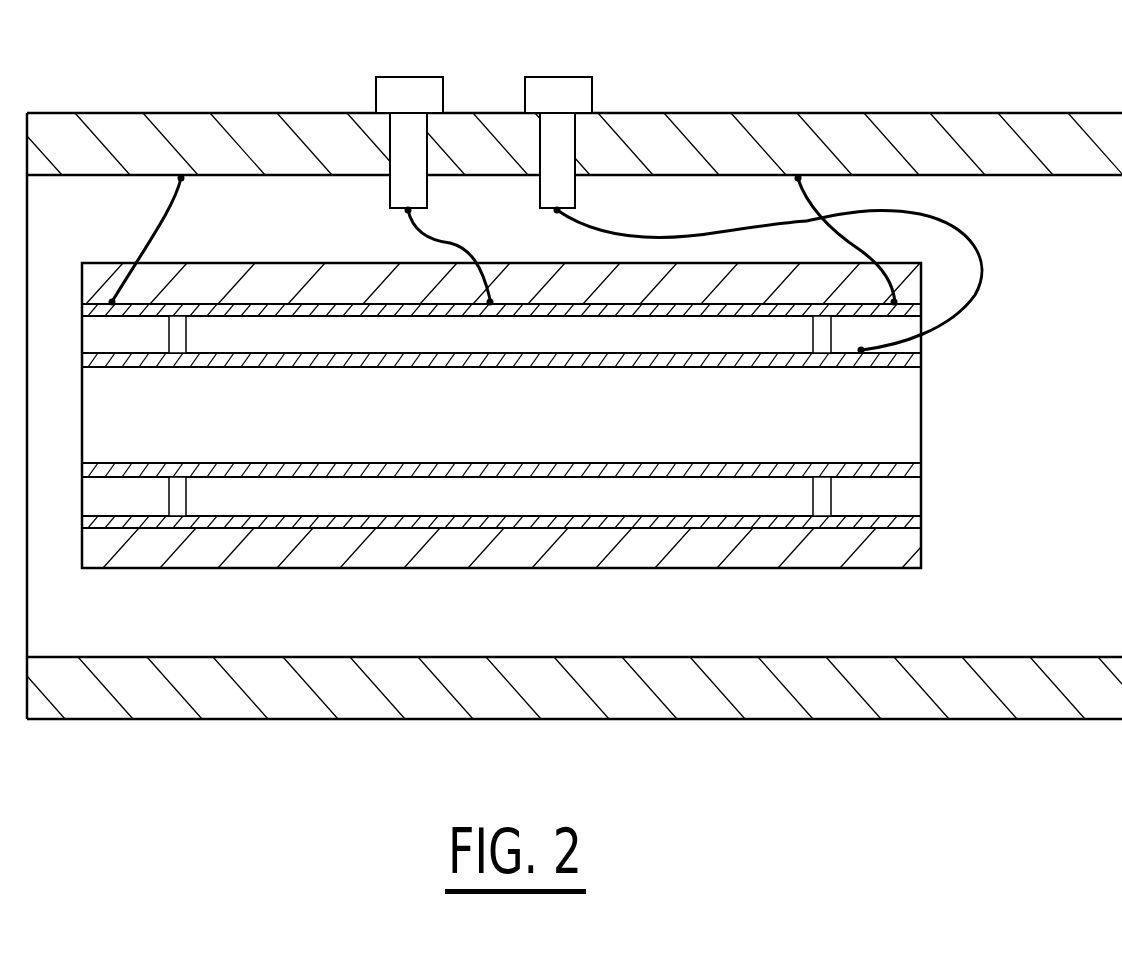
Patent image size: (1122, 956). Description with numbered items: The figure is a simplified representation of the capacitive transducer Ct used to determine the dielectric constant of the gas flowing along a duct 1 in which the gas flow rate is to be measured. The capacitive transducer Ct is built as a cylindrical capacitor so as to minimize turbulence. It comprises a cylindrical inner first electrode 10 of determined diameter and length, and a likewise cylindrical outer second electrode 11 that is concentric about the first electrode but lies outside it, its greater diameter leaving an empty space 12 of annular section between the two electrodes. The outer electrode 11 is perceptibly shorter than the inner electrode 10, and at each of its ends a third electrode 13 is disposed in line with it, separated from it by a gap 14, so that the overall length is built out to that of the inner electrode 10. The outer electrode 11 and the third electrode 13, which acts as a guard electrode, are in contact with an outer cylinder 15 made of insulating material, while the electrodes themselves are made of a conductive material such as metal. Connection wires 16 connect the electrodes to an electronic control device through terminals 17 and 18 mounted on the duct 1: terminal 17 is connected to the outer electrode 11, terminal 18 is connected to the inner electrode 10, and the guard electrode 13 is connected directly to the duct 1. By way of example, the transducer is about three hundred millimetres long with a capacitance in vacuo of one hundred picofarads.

The duct 1 is at (1035, 660).
The inner first electrode 10 is at (913, 473).
The outer second electrode 11 is at (636, 500).
The empty space 12 is at (452, 487).
The third electrode 13 is at (913, 522).
The gap 14 is at (180, 312).
The outer cylinder 15 is at (925, 547).
The connection wires 16 is at (175, 207).
The terminal 17 is at (387, 85).
The terminal 18 is at (570, 85).
The capacitive transducer Ct is at (1003, 271).